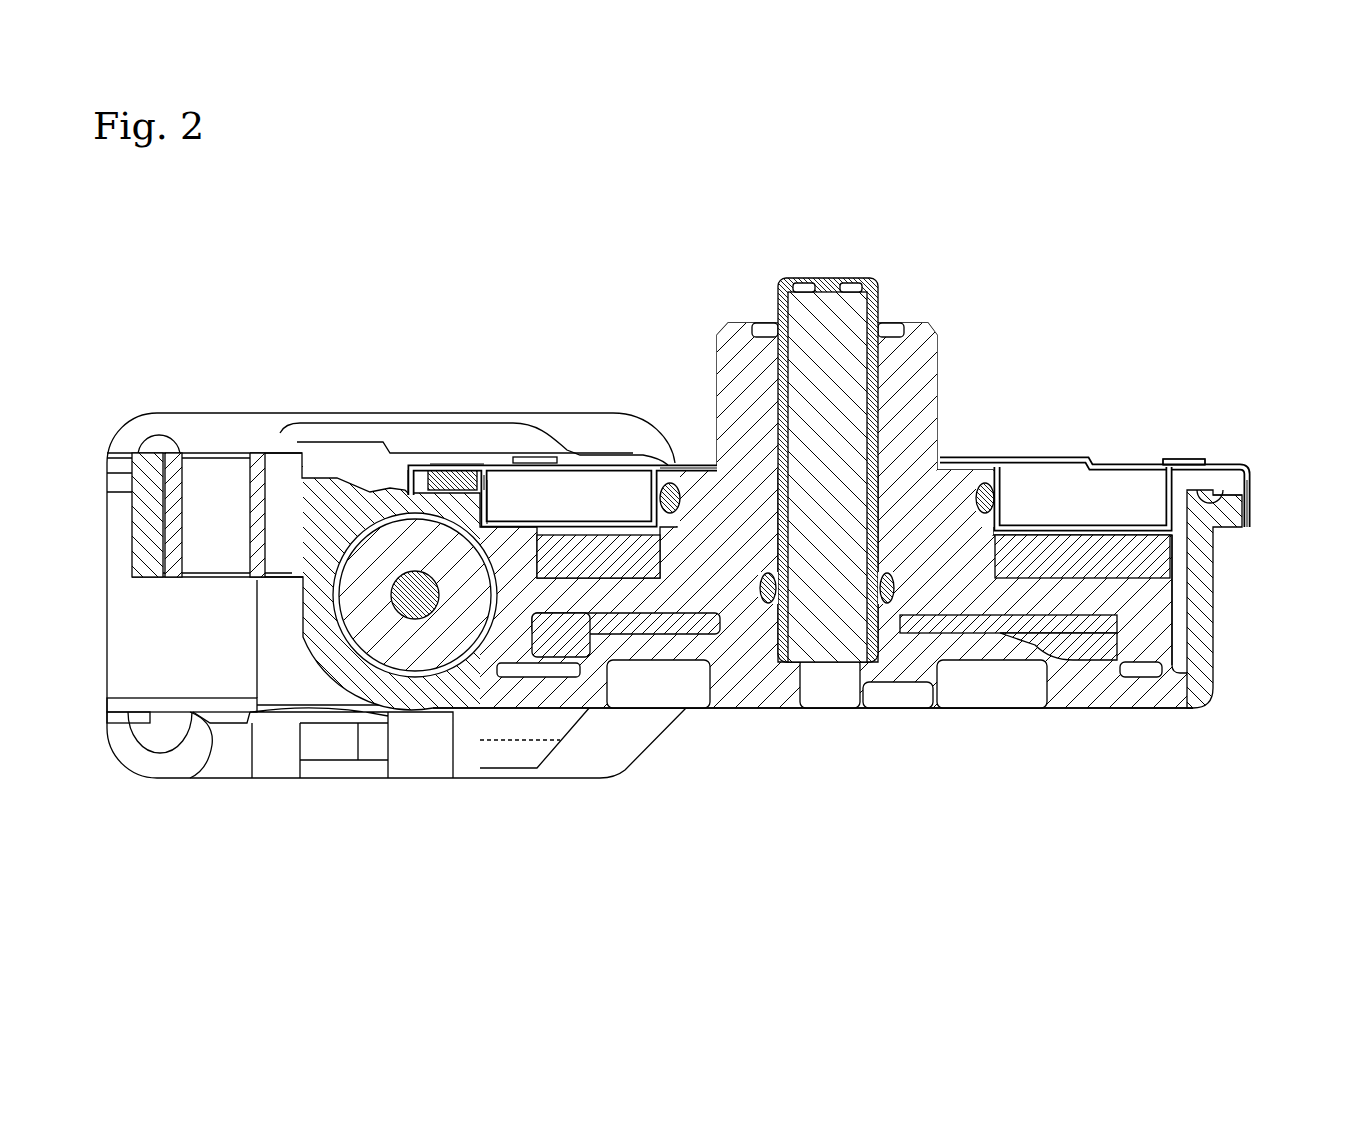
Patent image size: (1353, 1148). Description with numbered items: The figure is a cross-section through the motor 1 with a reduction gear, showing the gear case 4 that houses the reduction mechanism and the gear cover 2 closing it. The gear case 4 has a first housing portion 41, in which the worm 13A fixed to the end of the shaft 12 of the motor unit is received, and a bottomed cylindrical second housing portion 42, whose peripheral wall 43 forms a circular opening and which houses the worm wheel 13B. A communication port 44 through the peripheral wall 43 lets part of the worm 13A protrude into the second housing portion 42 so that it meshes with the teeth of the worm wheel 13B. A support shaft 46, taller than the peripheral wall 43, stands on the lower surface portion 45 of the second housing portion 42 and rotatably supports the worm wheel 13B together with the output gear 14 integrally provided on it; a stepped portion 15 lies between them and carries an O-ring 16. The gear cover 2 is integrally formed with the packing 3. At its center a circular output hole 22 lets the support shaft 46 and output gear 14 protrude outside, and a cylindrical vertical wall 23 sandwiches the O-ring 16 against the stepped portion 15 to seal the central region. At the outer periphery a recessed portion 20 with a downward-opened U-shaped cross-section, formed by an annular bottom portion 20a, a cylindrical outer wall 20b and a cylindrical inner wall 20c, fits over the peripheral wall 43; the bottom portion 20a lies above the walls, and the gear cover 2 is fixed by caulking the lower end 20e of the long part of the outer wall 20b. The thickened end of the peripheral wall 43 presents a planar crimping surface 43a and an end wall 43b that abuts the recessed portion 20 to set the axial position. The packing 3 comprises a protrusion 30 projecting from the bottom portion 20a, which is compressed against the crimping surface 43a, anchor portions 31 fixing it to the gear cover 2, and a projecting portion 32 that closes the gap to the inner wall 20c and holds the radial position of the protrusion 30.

The motor 1 is at (1100, 266).
The gear cover 2 is at (1098, 462).
The packing 3 is at (452, 476).
The gear case 4 is at (205, 397).
The shaft 12 is at (425, 612).
The worm 13A is at (410, 650).
The worm wheel 13B is at (694, 593).
The output gear 14 is at (737, 372).
The stepped portion 15 is at (957, 497).
The O-ring 16 is at (987, 485).
The recessed portion 20 is at (430, 462).
The bottom portion 20a is at (467, 460).
The outer wall 20b is at (405, 480).
The inner wall 20c is at (488, 486).
The lower end 20e is at (1250, 522).
The output hole 22 is at (690, 462).
The vertical wall 23 is at (1005, 498).
The protrusion 30 is at (1220, 505).
The anchor portion 31 is at (540, 457).
The projecting portion 32 is at (1180, 462).
The first housing portion 41 is at (350, 640).
The second housing portion 42 is at (1173, 658).
The peripheral wall 43 is at (1205, 633).
The crimping surface 43a is at (490, 484).
The end wall 43b is at (1238, 480).
The communication port 44 is at (485, 686).
The lower surface portion 45 is at (975, 637).
The support shaft 46 is at (850, 297).